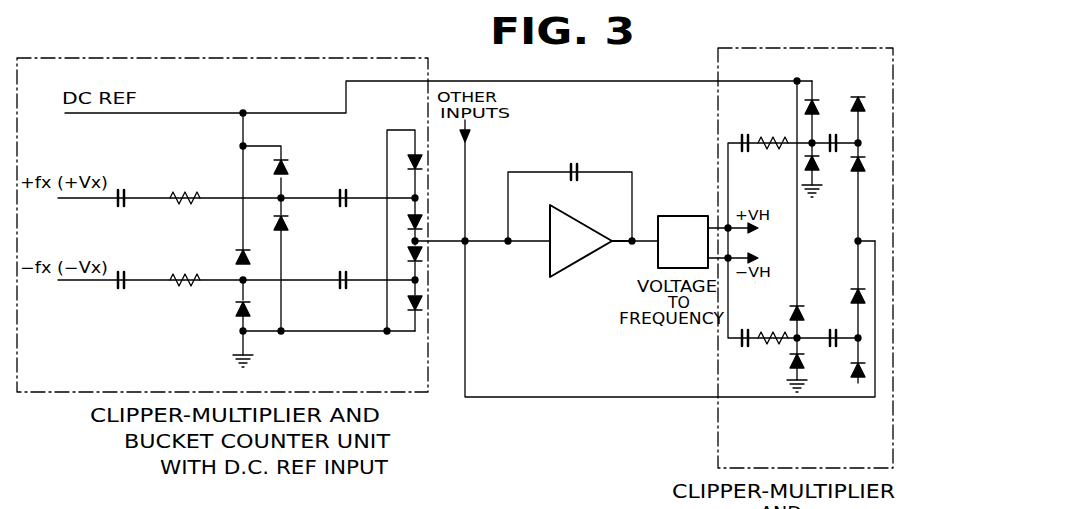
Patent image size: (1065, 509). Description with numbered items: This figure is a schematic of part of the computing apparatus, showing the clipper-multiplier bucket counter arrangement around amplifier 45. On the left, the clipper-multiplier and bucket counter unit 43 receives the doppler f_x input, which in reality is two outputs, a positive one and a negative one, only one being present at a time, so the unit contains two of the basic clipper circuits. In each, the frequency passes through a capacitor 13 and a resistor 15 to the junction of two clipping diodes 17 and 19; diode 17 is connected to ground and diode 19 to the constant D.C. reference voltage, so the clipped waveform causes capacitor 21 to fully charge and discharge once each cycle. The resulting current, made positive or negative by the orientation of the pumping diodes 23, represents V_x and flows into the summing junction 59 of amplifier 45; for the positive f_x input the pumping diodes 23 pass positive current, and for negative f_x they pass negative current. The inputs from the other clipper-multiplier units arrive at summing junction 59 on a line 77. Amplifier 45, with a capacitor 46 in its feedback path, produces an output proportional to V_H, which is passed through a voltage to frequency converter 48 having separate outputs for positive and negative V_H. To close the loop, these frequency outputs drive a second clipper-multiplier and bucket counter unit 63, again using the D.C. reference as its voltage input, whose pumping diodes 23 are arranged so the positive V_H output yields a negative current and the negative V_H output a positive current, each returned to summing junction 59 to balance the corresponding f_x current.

The capacitor 13 is at (121, 208).
The resistor 15 is at (188, 208).
The clipping diode 17 is at (289, 217).
The clipping diode 19 is at (289, 173).
The capacitor 21 is at (351, 175).
The pumping diodes 23 is at (425, 160).
The clipper-multiplier and bucket counter unit 43 is at (196, 36).
The amplifier 45 is at (554, 270).
The capacitor 46 is at (596, 140).
The voltage to frequency converter 48 is at (680, 216).
The summing junction 59 is at (468, 239).
The clipper-multiplier and bucket counter unit 63 is at (782, 50).
The line 77 is at (470, 148).